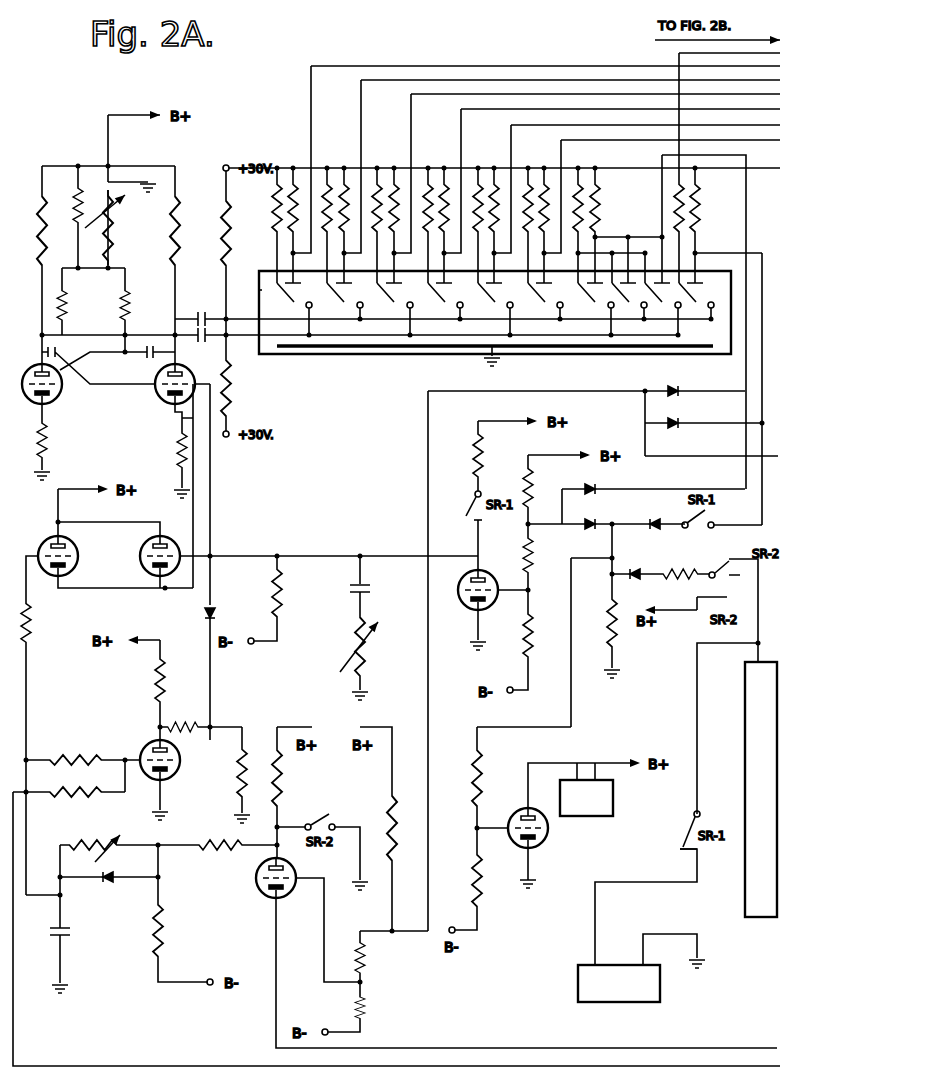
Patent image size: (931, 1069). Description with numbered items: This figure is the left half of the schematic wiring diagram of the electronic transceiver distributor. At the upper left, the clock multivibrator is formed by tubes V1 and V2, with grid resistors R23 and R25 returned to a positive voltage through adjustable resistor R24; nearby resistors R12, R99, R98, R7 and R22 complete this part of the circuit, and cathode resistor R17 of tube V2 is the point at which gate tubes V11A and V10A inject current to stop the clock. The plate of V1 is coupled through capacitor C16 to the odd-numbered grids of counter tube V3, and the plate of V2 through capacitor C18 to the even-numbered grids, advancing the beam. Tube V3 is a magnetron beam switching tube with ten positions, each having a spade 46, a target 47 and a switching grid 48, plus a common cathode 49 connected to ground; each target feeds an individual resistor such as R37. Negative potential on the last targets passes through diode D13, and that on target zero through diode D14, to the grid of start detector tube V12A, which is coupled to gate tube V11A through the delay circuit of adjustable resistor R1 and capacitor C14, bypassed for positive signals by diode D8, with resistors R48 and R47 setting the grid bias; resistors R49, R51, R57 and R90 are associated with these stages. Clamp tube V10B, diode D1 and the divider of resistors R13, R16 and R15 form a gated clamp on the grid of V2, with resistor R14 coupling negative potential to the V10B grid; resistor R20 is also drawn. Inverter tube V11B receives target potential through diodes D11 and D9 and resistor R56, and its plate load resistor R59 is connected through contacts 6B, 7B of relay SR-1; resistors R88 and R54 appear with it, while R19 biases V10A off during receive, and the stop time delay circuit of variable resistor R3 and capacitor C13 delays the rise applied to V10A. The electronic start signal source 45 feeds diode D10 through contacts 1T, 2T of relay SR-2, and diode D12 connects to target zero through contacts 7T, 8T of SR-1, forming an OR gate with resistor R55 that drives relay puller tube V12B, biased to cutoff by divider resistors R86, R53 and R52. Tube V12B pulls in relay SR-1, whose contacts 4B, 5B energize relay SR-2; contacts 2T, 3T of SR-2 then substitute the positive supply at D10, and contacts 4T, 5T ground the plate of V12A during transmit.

The resistor R12 is at (76, 214).
The adjustable resistor R24 is at (114, 212).
The grid resistor R23 is at (138, 292).
The grid resistor R25 is at (68, 308).
The capacitor C18 is at (200, 312).
The capacitor C16 is at (197, 328).
The resistor R99 is at (226, 230).
The resistor R98 is at (228, 402).
The clock multivibrator tube V1 is at (32, 365).
The clock multivibrator tube V2 is at (193, 378).
The resistor R7 is at (52, 444).
The cathode resistor R17 is at (176, 450).
The gate tube V11A is at (48, 536).
The gate tube V10A is at (184, 520).
The resistor R22 is at (32, 624).
The clamp diode D1 is at (218, 606).
The resistor R19 is at (280, 602).
The capacitor C13 is at (368, 596).
The variable resistor R3 is at (370, 650).
The resistor R13 is at (156, 694).
The resistor R16 is at (195, 722).
The resistor R15 is at (247, 748).
The clamp tube V10B is at (200, 768).
The resistor R20 is at (94, 754).
The resistor R14 is at (96, 796).
The adjustable resistor R1 is at (96, 838).
The resistor R48 is at (222, 834).
The diode D8 is at (112, 883).
The capacitor C14 is at (70, 930).
The resistor R47 is at (162, 944).
The start detector tube V12A is at (258, 894).
The resistor R49 is at (284, 786).
The relay contact 5T is at (298, 819).
The relay contact 4T is at (331, 819).
The resistor R51 is at (388, 810).
The resistor R57 is at (362, 974).
The resistor R90 is at (362, 1022).
The target resistor R37 is at (293, 180).
The counter tube V3 is at (487, 301).
The target 47 is at (290, 286).
The spade 46 is at (262, 290).
The switching grid 48 is at (310, 344).
The common cathode 49 is at (374, 346).
The diode D13 is at (678, 390).
The diode D14 is at (678, 428).
The diode D11 is at (592, 486).
The diode D9 is at (596, 522).
The diode D12 is at (656, 518).
The diode D10 is at (646, 570).
The resistor R55 is at (692, 578).
The load resistor R59 is at (474, 452).
The relay contact 7B is at (472, 502).
The relay contact 6B is at (474, 522).
The inverter tube V11B is at (490, 570).
The resistor R88 is at (534, 492).
The resistor R56 is at (554, 552).
The resistor R54 is at (534, 654).
The resistor R86 is at (616, 642).
The relay contact 8T is at (684, 528).
The relay contact 7T is at (716, 520).
The relay contact 2T is at (704, 566).
The relay contact 1T is at (730, 562).
The relay contact 3T is at (716, 598).
The relay contact 4B is at (684, 822).
The relay contact 5B is at (682, 852).
The switching relay SR-2 is at (619, 983).
The relay SR-1 is at (586, 798).
The electronic start signal source 45 is at (744, 726).
The resistor R53 is at (474, 776).
The resistor R52 is at (474, 880).
The relay puller tube V12B is at (510, 846).